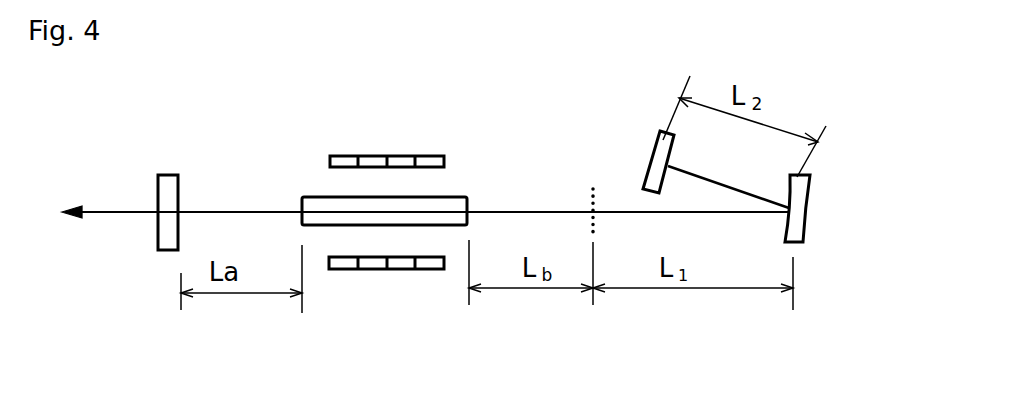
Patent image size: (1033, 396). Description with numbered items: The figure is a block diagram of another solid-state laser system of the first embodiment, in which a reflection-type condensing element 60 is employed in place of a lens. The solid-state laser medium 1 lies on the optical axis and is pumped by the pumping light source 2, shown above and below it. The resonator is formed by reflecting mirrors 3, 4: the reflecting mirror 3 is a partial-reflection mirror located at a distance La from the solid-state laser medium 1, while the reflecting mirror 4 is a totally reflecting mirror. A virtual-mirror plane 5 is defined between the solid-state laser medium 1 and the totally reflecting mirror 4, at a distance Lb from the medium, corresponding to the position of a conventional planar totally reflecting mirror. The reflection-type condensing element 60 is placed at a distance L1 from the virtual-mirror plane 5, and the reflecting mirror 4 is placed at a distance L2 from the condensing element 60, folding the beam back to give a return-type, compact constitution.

The solid-state laser medium 1 is at (452, 197).
The pumping light source 2 is at (372, 155).
The reflecting mirror 3 is at (167, 170).
The reflecting mirror 4 is at (658, 138).
The virtual-mirror plane 5 is at (593, 188).
The reflection-type condensing element 60 is at (808, 238).